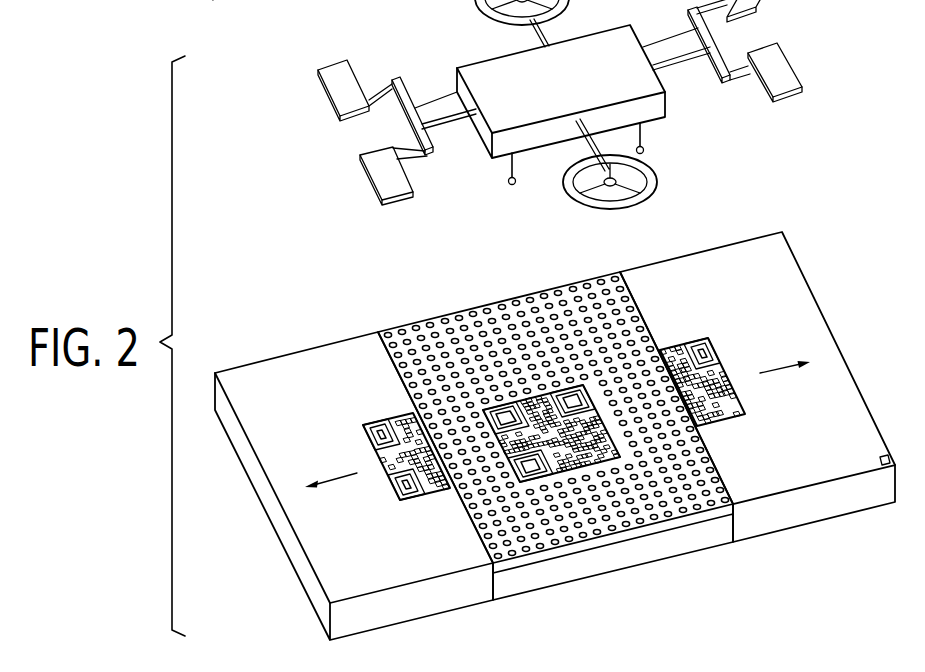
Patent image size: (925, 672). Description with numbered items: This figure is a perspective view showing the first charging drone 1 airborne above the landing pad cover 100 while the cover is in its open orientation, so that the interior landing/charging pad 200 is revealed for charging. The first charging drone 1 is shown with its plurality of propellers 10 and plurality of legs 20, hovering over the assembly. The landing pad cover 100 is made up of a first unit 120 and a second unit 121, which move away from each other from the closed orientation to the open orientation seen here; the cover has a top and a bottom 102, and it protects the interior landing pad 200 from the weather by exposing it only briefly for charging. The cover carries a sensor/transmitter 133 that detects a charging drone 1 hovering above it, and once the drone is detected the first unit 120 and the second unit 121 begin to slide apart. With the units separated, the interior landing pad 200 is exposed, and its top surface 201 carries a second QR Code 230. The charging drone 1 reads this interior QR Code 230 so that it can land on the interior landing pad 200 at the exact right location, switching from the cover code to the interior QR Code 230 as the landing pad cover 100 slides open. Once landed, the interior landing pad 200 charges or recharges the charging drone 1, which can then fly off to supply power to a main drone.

The first charging drone 1 is at (587, 35).
The propellers 10 is at (647, 157).
The legs 20 is at (511, 185).
The landing pad cover 100 is at (633, 268).
The bottom 102 is at (213, 0).
The first unit 120 is at (351, 397).
The second unit 121 is at (752, 302).
The sensor/transmitter 133 is at (882, 465).
The interior landing/charging pad 200 is at (575, 545).
The top surface 201 is at (662, 495).
The second QR Code 230 is at (515, 325).